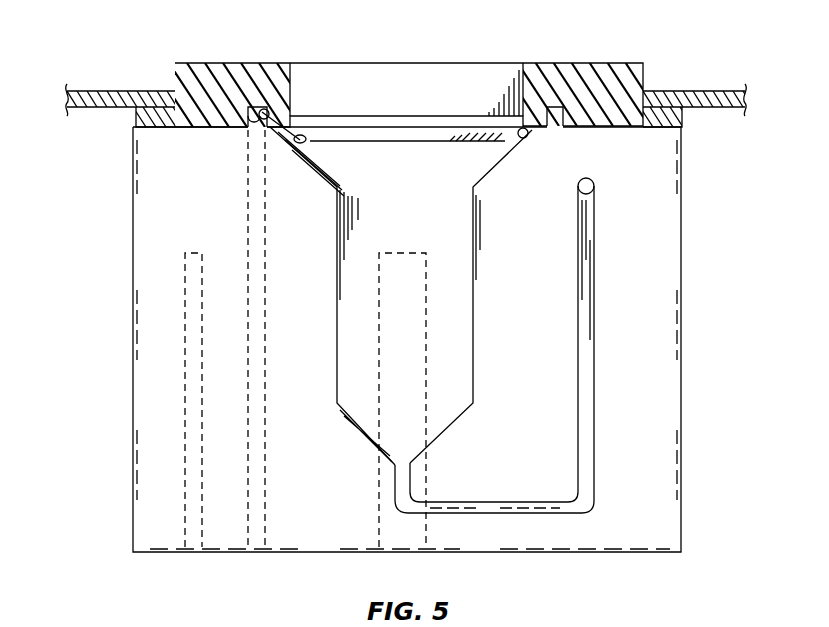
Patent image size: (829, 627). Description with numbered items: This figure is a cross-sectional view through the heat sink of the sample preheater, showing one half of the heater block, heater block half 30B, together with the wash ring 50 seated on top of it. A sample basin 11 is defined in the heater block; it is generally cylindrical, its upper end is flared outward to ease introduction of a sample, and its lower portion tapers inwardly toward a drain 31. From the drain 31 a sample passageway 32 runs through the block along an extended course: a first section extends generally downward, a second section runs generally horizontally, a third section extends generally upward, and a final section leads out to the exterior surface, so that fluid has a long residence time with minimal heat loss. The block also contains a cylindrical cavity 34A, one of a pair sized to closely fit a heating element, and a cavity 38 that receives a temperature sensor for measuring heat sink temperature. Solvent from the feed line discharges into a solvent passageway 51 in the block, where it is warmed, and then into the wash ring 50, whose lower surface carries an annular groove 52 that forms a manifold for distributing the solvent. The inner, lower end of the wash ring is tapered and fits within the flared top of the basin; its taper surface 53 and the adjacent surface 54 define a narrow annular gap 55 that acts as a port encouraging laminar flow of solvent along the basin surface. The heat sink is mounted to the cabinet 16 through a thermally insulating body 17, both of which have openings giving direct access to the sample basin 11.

The sample basin 11 is at (473, 235).
The cabinet 16 is at (112, 91).
The thermally insulating body 17 is at (136, 123).
The heater block half 30B is at (667, 193).
The drain 31 is at (412, 462).
The sample passageway 32 is at (508, 508).
The cylindrical cavity 34A is at (378, 496).
The cavity 38 is at (187, 378).
The wash ring 50 is at (238, 63).
The solvent passageway 51 is at (247, 220).
The annular groove 52 is at (252, 123).
The taper surface 53 is at (305, 140).
The adjacent surface 54 is at (258, 100).
The annular gap 55 is at (522, 140).